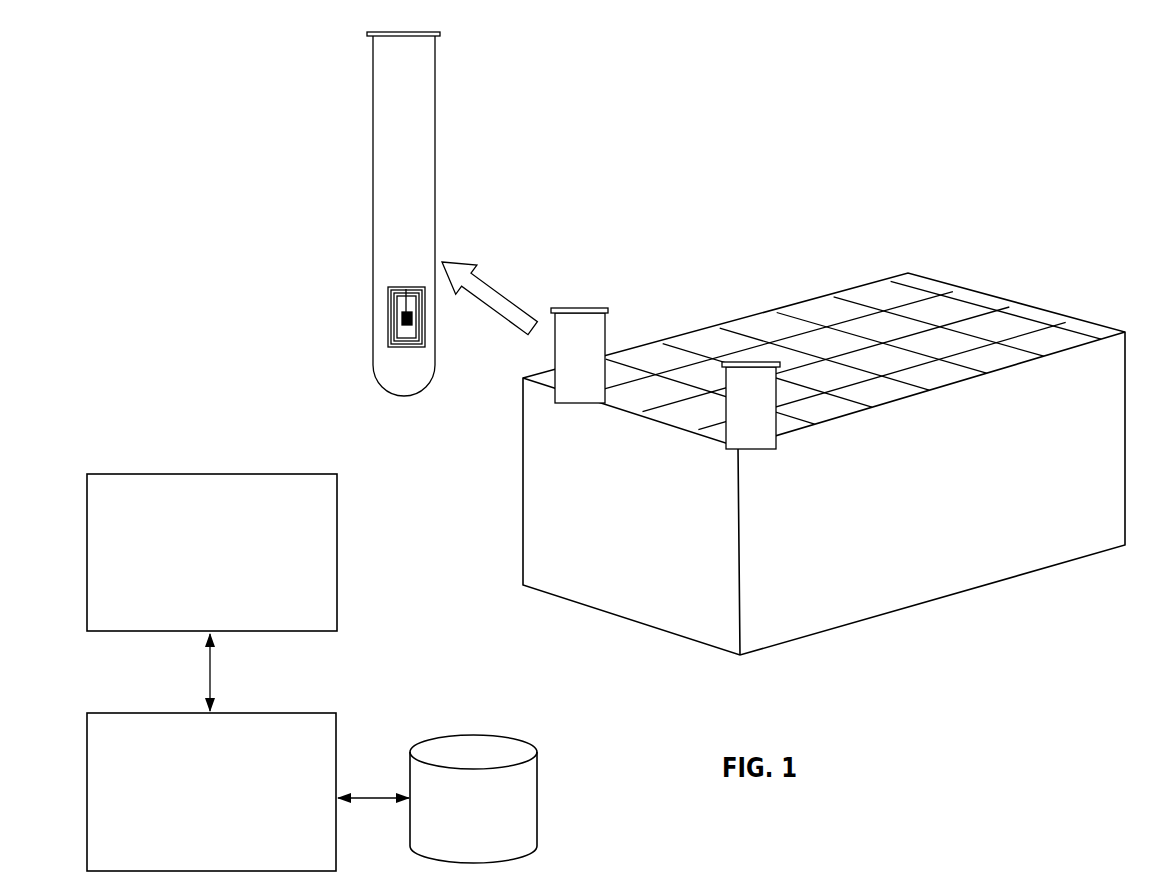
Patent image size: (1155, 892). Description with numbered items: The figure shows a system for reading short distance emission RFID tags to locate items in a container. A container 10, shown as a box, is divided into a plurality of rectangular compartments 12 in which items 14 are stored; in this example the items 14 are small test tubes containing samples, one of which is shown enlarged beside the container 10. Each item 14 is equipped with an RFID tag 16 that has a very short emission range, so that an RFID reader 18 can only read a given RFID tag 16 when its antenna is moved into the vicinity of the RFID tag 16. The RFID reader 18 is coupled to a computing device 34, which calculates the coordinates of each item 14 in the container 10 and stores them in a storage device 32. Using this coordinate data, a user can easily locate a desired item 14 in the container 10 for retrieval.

The container 10 is at (545, 528).
The compartments 12 is at (778, 323).
The items 14 is at (390, 170).
The RFID tag 16 is at (390, 346).
The RFID reader 18 is at (288, 507).
The storage device 32 is at (483, 822).
The computing device 34 is at (314, 746).